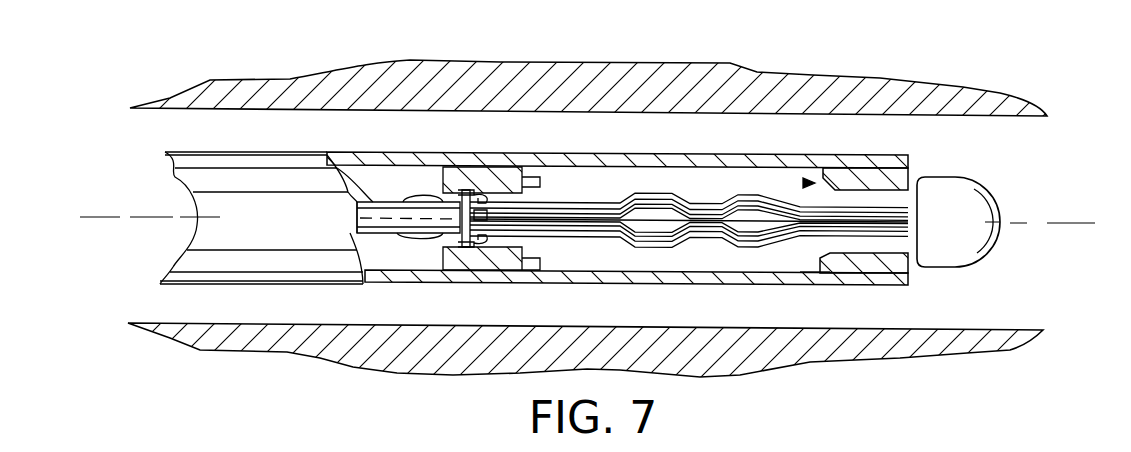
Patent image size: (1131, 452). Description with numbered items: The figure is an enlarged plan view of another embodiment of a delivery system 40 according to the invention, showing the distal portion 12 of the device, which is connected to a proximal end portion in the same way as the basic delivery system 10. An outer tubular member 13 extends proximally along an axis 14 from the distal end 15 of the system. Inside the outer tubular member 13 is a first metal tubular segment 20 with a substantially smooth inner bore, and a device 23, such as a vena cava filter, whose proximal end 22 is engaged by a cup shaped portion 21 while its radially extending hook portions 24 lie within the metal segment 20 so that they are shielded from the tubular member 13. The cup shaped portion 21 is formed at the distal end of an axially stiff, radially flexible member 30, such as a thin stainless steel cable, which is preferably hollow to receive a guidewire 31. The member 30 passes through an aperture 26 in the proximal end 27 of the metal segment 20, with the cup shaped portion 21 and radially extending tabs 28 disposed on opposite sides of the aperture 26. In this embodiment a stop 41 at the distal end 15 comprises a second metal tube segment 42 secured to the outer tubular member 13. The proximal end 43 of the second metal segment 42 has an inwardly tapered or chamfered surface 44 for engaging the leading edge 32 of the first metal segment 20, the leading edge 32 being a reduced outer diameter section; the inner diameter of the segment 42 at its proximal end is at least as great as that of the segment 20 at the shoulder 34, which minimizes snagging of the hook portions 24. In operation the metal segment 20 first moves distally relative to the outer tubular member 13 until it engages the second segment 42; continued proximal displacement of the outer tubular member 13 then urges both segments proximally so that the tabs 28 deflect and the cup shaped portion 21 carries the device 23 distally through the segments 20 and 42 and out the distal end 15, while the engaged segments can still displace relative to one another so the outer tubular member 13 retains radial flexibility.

The delivery system 10 is at (328, 51).
The distal portion 12 is at (824, 142).
The outer tubular member 13 is at (192, 152).
The axis 14 is at (1037, 220).
The distal end 15 is at (932, 277).
The metal tubular segment 20 is at (463, 248).
The cup shaped portion 21 is at (460, 247).
The proximal end 22 is at (492, 178).
The device 23 is at (611, 202).
The hook portions 24 is at (478, 190).
The aperture 26 is at (414, 238).
The proximal end 27 is at (448, 194).
The tabs 28 is at (420, 197).
The axially stiff, radially flexible member 30 is at (344, 167).
The guidewire 31 is at (355, 208).
The leading edge 32 is at (543, 184).
The shoulder 34 is at (535, 268).
The delivery system 40 is at (706, 137).
The stop 41 is at (868, 264).
The second metal tube segment 42 is at (878, 178).
The proximal end 43 is at (803, 183).
The chamfered surface 44 is at (800, 265).